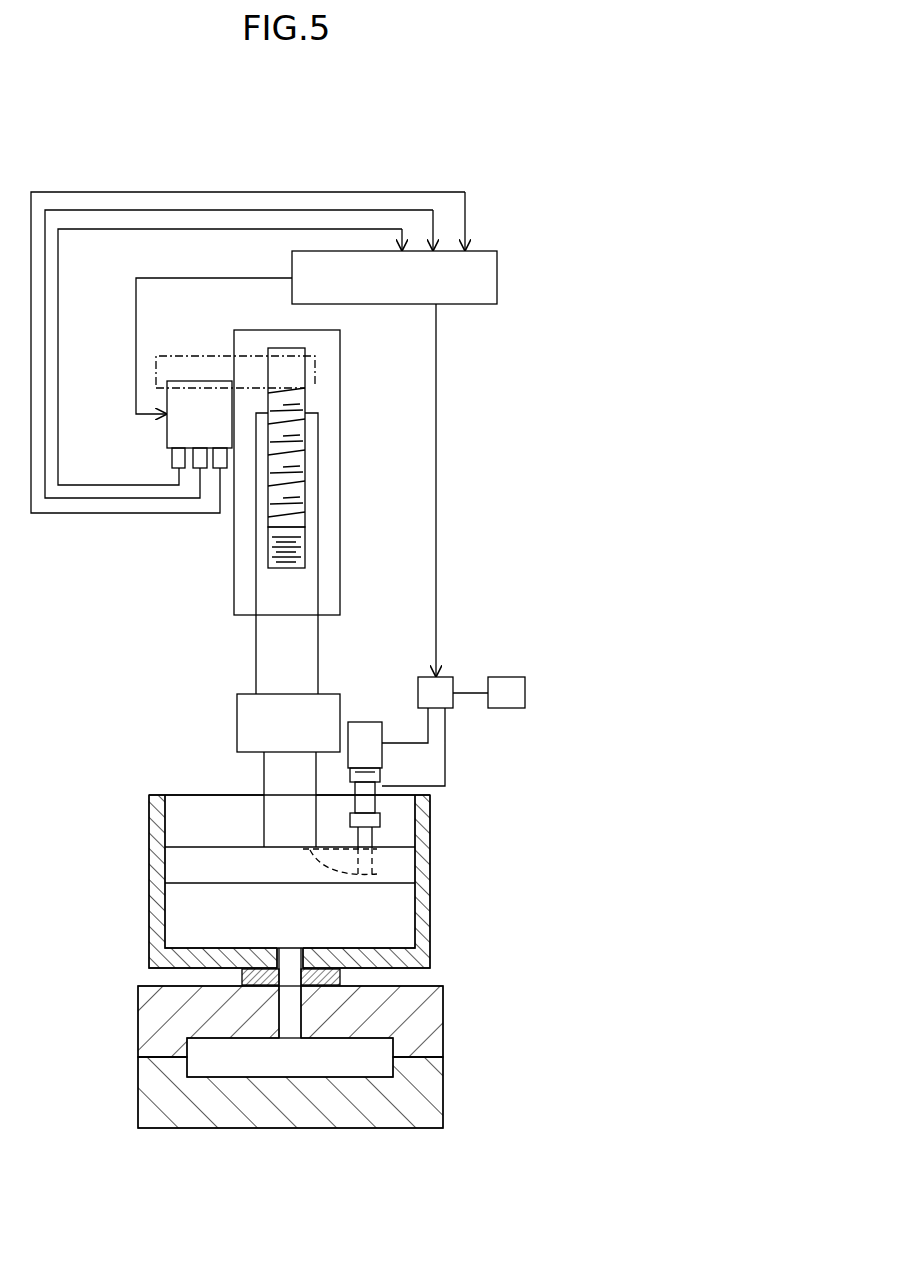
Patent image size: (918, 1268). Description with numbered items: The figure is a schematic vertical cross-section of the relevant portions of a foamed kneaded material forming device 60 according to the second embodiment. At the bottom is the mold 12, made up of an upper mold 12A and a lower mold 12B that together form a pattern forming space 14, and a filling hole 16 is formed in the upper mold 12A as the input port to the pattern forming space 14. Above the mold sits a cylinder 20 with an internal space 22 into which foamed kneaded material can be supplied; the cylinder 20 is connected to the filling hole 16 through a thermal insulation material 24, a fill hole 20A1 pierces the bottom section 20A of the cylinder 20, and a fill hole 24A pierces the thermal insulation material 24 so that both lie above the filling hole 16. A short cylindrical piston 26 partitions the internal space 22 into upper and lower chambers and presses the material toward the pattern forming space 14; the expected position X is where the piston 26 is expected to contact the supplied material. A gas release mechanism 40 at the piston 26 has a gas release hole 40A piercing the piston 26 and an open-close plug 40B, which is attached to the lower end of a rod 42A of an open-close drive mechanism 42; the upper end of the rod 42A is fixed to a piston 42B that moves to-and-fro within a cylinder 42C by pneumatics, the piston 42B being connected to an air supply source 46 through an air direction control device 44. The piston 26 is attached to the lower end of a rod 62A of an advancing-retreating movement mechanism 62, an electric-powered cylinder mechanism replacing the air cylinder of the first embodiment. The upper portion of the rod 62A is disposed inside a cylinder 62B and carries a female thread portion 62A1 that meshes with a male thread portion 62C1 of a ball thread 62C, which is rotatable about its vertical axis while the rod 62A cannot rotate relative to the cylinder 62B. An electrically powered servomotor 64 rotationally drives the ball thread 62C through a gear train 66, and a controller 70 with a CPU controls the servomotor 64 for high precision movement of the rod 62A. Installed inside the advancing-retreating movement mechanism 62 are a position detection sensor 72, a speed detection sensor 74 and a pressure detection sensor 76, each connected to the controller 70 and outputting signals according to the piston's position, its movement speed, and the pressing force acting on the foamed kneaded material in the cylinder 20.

The foamed kneaded material forming device 60 is at (549, 91).
The controller 70 is at (481, 251).
The gear train 66 is at (201, 356).
The advancing-retreating movement mechanism 62 is at (257, 565).
The rod 62A is at (261, 772).
The female thread portion 62A1 is at (300, 540).
The cylinder 62B is at (340, 587).
The ball thread 62C is at (308, 400).
The male thread portion 62C1 is at (300, 457).
The electrically powered servomotor 64 is at (167, 428).
The position detection sensor 72 is at (172, 458).
The speed detection sensor 74 is at (196, 448).
The pressure detection sensor 76 is at (221, 450).
The gas release mechanism 40 is at (404, 747).
The gas release hole 40A is at (313, 864).
The open-close plug 40B is at (316, 848).
The open-close drive mechanism 42 is at (424, 738).
The rod 42A is at (370, 803).
The piston 42B is at (364, 768).
The cylinder 42C is at (393, 732).
The air direction control device 44 is at (447, 677).
The air supply source 46 is at (503, 677).
The cylinder 20 is at (288, 859).
The bottom section 20A is at (195, 948).
The fill hole 20A1 is at (298, 948).
The internal space 22 is at (270, 933).
The thermal insulation material 24 is at (242, 978).
The fill hole 24A is at (285, 948).
The piston 26 is at (192, 843).
The expected position X is at (420, 892).
The mold 12 is at (345, 1057).
The upper mold 12A is at (443, 1020).
The lower mold 12B is at (443, 1090).
The pattern forming space 14 is at (304, 1070).
The filling hole 16 is at (283, 998).